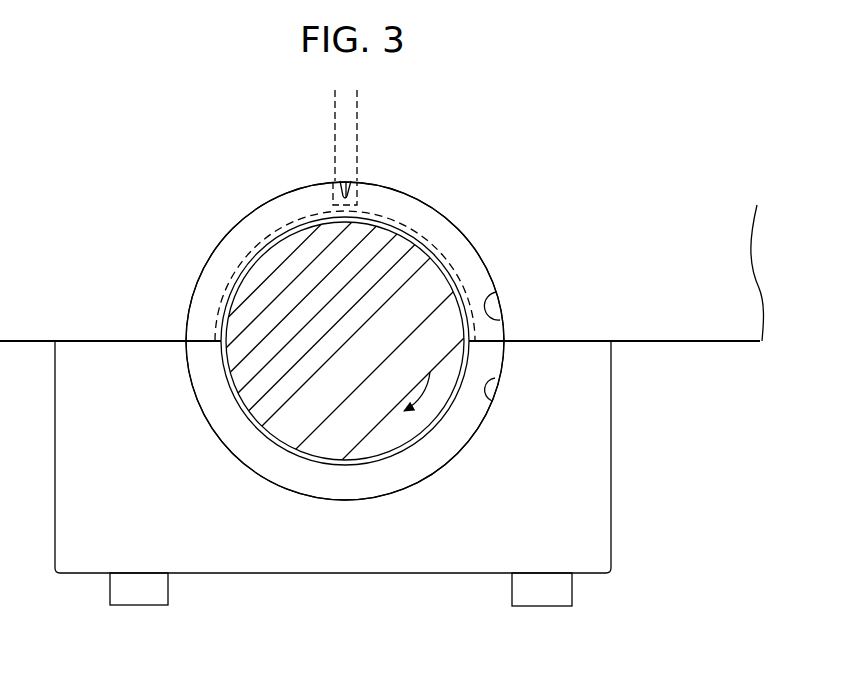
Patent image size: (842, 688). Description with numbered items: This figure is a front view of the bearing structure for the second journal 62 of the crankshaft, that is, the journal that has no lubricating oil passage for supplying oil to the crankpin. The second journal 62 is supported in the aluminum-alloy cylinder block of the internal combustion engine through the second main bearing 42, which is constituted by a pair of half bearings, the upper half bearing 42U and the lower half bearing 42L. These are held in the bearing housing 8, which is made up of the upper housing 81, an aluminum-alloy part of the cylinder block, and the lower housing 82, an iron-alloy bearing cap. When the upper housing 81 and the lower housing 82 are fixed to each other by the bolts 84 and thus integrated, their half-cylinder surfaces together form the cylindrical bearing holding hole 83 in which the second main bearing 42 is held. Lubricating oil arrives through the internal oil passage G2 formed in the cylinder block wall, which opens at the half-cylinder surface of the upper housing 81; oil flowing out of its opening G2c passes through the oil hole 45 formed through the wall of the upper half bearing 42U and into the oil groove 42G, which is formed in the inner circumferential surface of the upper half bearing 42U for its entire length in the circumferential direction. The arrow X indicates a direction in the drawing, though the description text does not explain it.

The bearing housing 8 is at (722, 377).
The upper housing 81 is at (668, 326).
The lower housing 82 is at (611, 505).
The bearing holding hole 83 is at (500, 318).
The bolt 84 is at (139, 590).
The second main bearing 42 is at (228, 232).
The upper half bearing 42U is at (208, 270).
The lower half bearing 42L is at (190, 371).
The oil groove 42G is at (316, 208).
The oil hole 45 is at (356, 193).
The second journal 62 is at (283, 412).
The internal oil passage G2 is at (330, 110).
The opening of the internal oil passage G2c is at (349, 192).
The rotation direction X is at (410, 402).